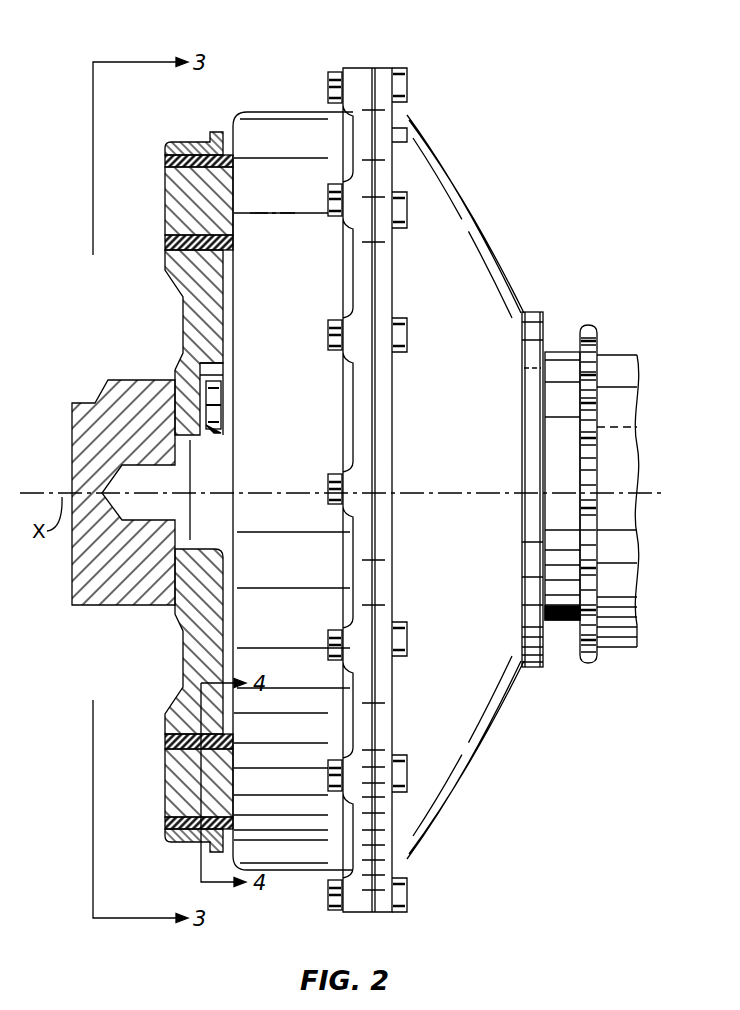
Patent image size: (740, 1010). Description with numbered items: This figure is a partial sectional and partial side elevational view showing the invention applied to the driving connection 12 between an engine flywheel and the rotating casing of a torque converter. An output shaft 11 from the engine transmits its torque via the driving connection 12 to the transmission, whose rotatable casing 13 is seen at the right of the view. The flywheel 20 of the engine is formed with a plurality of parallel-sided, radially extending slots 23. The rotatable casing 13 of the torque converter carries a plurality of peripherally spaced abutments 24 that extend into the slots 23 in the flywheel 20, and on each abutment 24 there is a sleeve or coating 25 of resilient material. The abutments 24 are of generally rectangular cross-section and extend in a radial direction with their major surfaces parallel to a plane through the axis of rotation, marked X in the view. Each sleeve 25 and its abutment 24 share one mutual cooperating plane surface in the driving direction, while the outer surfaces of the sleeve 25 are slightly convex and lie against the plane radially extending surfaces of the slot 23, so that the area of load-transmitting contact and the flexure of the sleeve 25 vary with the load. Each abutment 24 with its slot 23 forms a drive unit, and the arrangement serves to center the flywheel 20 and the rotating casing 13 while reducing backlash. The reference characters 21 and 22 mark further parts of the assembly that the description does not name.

The output shaft 11 is at (82, 403).
The driving connection 12 is at (112, 298).
The rotatable casing 13 is at (458, 200).
The flywheel 20 is at (182, 686).
The retaining ring 21 is at (181, 845).
The housing cup 22 is at (226, 848).
The slots 23 is at (165, 735).
The abutments 24 is at (208, 213).
The sleeve 25 is at (165, 819).